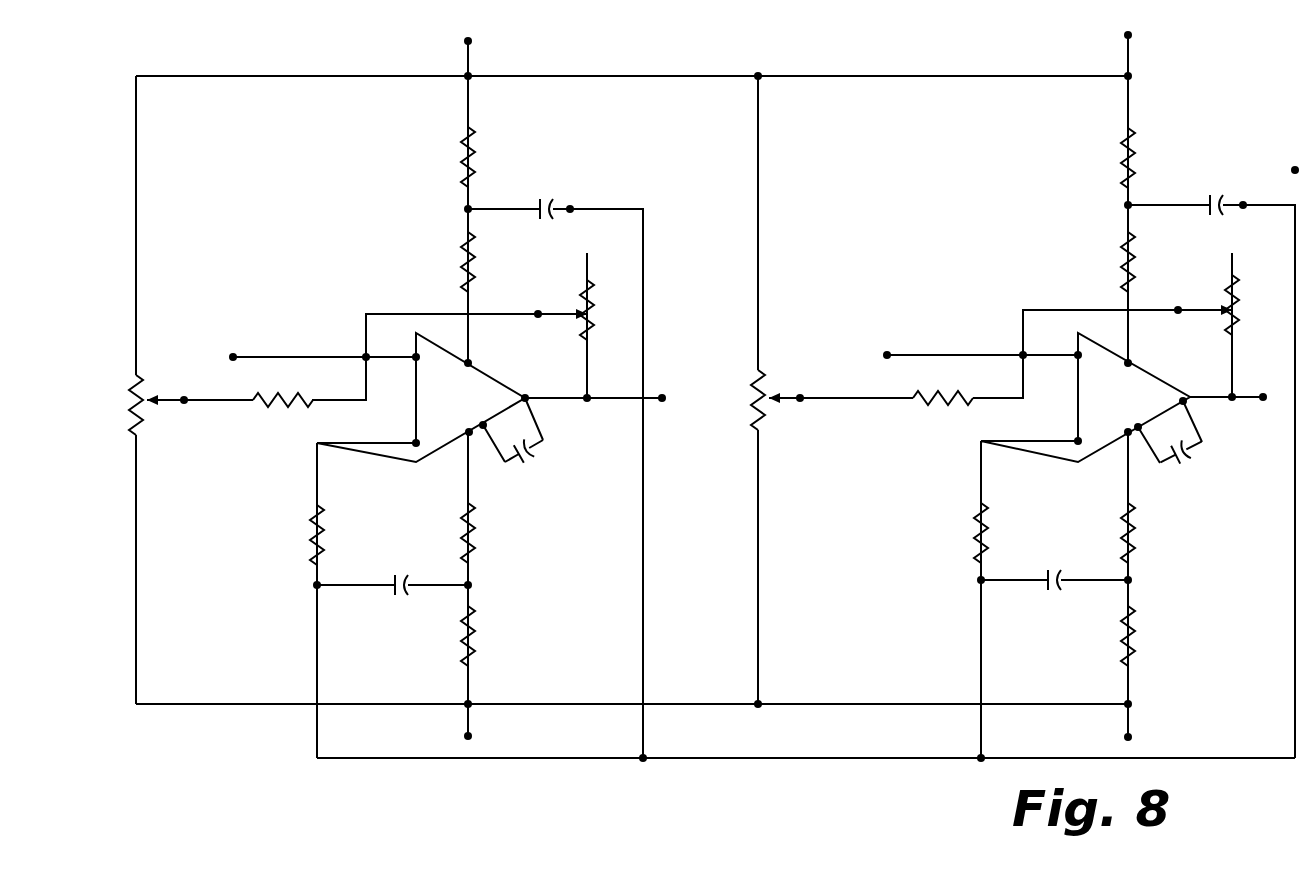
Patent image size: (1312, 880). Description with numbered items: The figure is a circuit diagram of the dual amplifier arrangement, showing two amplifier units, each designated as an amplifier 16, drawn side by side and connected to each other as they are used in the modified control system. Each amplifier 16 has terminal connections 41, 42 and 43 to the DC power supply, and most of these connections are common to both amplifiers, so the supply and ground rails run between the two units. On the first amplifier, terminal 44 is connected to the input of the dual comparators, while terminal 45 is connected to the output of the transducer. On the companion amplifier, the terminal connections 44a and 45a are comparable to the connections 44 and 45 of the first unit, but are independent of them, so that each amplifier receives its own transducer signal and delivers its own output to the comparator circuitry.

The amplifier 16 is at (714, 396).
The terminal connection 41 is at (1157, 41).
The terminal connection 42 is at (1168, 736).
The terminal connection 43 is at (1292, 167).
The terminal 44 is at (663, 394).
The terminal connection 44a is at (1265, 401).
The terminal 45 is at (231, 353).
The terminal connection 45a is at (887, 351).